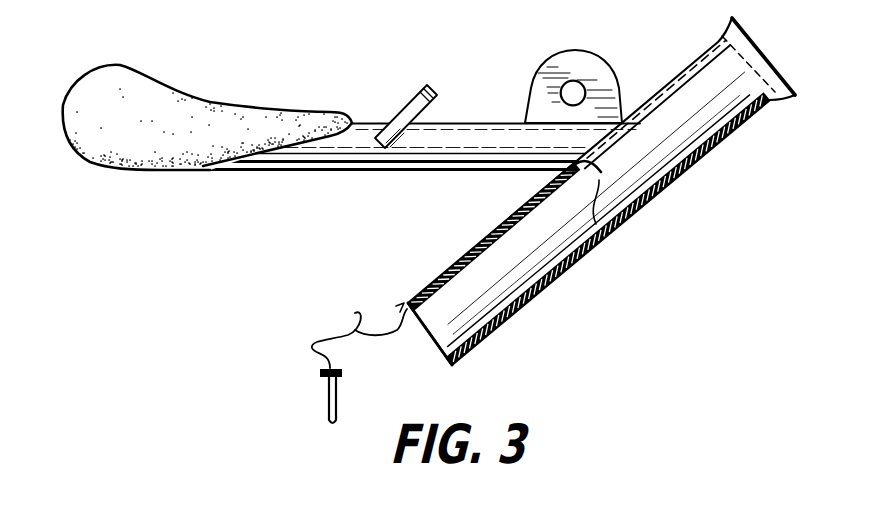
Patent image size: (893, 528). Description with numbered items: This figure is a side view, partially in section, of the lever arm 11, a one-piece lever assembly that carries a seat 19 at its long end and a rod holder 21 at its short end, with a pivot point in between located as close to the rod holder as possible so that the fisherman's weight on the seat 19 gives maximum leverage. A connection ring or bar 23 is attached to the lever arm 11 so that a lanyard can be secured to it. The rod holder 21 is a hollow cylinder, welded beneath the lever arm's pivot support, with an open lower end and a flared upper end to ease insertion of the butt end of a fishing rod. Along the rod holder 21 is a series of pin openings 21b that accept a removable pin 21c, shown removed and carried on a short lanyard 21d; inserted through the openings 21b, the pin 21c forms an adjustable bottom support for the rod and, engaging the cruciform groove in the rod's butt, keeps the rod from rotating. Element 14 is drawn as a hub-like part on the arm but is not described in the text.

The lever arm 11 is at (315, 160).
The hub 14 is at (574, 92).
The seat 19 is at (122, 90).
The rod holder 21 is at (703, 128).
The pin openings 21b is at (498, 231).
The removable pin 21c is at (289, 397).
The short lanyard 21d is at (355, 313).
The connection ring or bar 23 is at (400, 117).